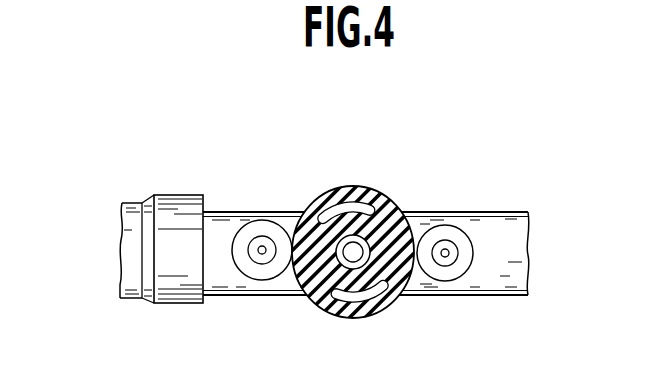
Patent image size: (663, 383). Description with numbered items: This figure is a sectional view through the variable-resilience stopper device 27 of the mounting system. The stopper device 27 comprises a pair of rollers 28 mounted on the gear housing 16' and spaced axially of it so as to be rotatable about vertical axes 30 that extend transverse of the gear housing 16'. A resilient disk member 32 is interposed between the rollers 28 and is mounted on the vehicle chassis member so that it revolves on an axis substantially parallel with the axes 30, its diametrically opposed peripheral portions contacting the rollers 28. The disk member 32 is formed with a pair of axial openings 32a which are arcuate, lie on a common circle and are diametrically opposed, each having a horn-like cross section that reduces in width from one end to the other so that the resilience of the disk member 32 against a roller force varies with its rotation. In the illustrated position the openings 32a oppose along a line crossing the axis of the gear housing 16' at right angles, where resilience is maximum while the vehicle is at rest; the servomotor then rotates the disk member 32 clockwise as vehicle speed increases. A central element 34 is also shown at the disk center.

The gear housing 16' is at (161, 213).
The variable-resilience stopper device 27 is at (353, 246).
The rollers 28 is at (253, 230).
The vertical axes 30 is at (261, 255).
The resilient disk member 32 is at (313, 191).
The axial openings 32a is at (369, 207).
The central bore 34 is at (363, 255).